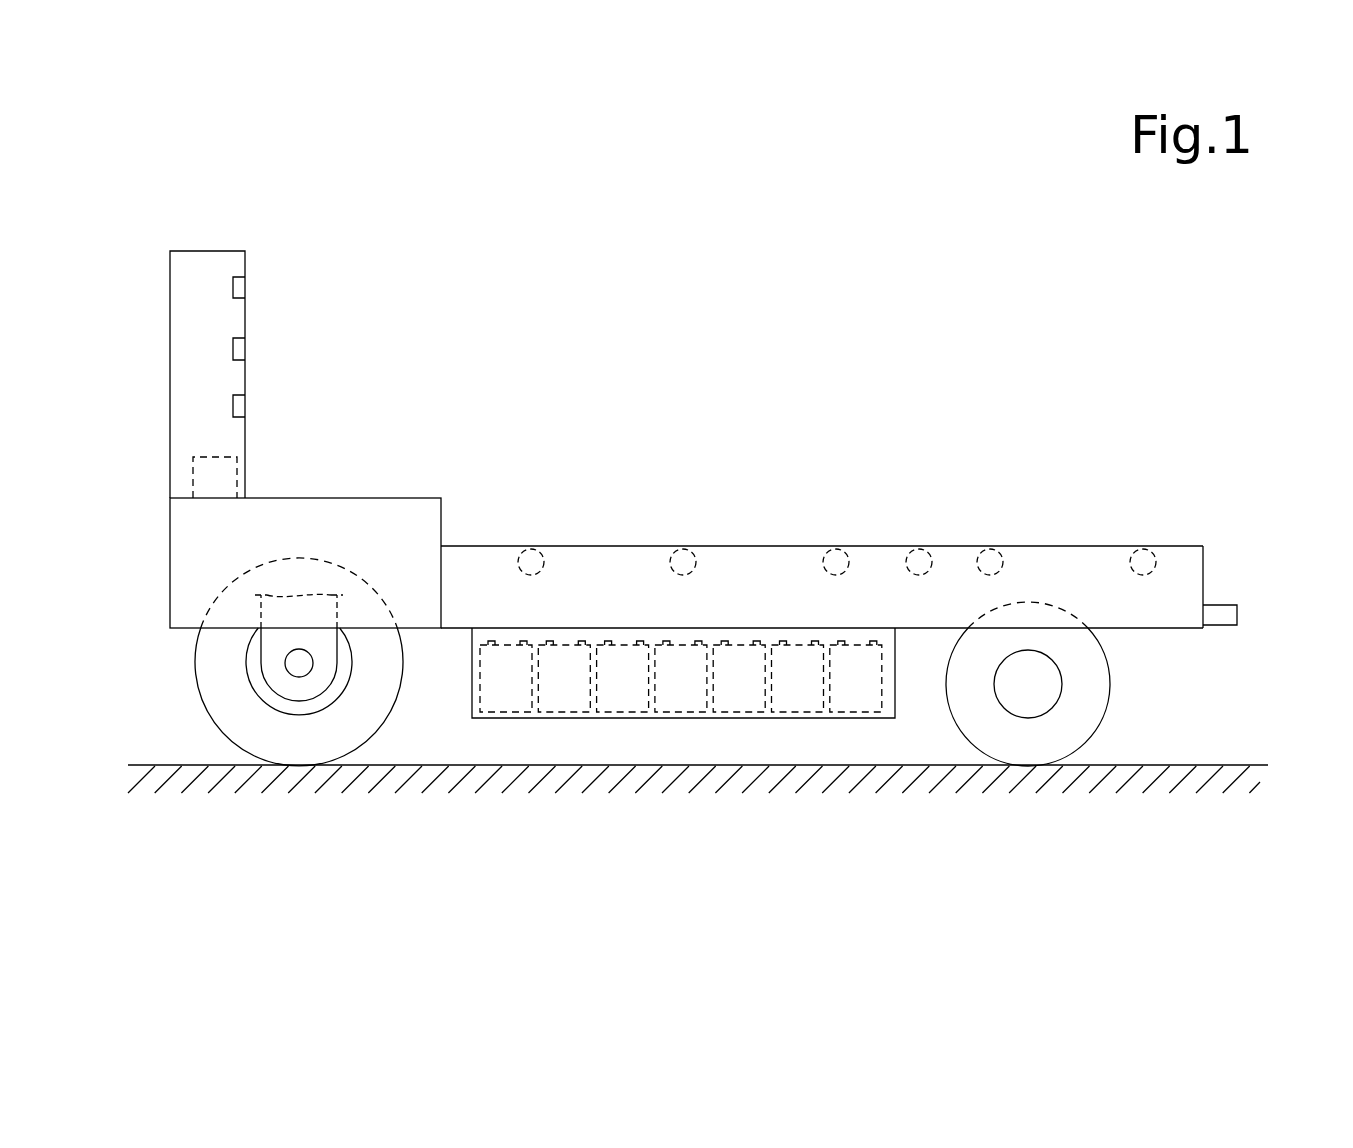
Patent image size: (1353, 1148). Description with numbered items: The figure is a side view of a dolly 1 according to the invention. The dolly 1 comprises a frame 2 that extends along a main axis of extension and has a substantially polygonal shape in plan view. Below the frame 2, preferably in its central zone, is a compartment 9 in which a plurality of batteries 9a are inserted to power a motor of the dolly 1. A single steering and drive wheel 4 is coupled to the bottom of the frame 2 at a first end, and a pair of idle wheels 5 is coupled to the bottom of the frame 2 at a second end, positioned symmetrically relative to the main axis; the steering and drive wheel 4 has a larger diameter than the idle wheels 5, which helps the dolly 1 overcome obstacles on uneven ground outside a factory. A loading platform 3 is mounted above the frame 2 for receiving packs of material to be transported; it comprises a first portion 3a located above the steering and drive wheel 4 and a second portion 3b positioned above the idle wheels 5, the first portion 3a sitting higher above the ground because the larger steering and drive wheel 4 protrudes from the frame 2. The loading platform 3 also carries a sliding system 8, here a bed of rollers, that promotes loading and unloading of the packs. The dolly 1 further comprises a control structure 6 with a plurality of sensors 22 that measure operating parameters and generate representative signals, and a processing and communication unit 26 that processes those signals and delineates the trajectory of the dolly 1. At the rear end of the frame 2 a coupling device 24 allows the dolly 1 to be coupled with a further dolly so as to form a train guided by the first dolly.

The dolly 1 is at (760, 310).
The frame 2 is at (1192, 584).
The loading platform 3 is at (634, 546).
The first portion of the loading platform 3a is at (375, 498).
The second portion of the loading platform 3b is at (962, 545).
The steering and drive wheel 4 is at (200, 702).
The idle wheels 5 is at (1110, 683).
The control structure 6 is at (168, 320).
The sliding system 8 is at (532, 562).
The compartment 9 is at (866, 735).
The batteries 9a is at (795, 678).
The sensors 22 is at (243, 288).
The coupling device 24 is at (1217, 615).
The processing and communication unit 26 is at (240, 466).